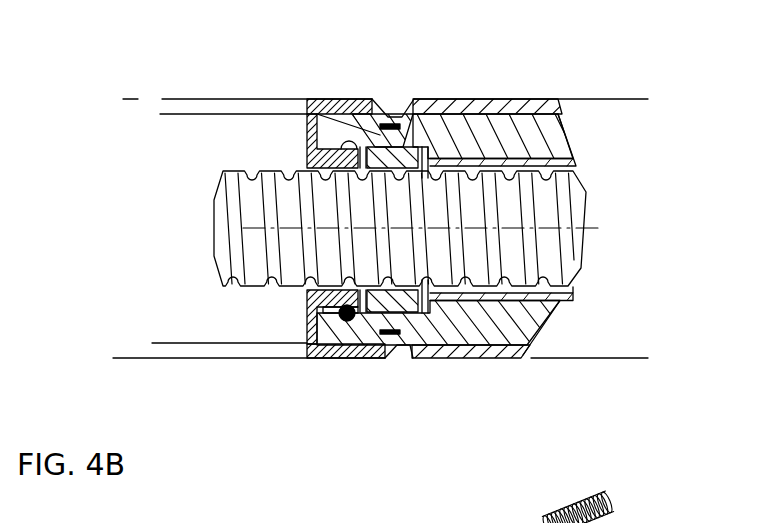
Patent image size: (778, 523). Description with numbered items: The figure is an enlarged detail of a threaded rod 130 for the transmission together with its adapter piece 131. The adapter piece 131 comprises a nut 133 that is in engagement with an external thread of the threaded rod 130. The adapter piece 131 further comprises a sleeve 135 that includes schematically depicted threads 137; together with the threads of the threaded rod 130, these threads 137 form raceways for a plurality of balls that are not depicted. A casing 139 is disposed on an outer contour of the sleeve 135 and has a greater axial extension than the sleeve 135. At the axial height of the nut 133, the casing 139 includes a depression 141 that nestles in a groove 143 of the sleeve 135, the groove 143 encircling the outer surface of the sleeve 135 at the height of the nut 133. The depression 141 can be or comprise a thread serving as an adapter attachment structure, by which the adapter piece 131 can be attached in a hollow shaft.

The threaded rod 130 is at (516, 213).
The adapter piece 131 is at (461, 76).
The nut 133 is at (385, 295).
The sleeve 135 is at (502, 318).
The threads 137 is at (480, 292).
The casing 139 is at (425, 313).
The depression 141 is at (392, 104).
The groove 143 is at (381, 127).